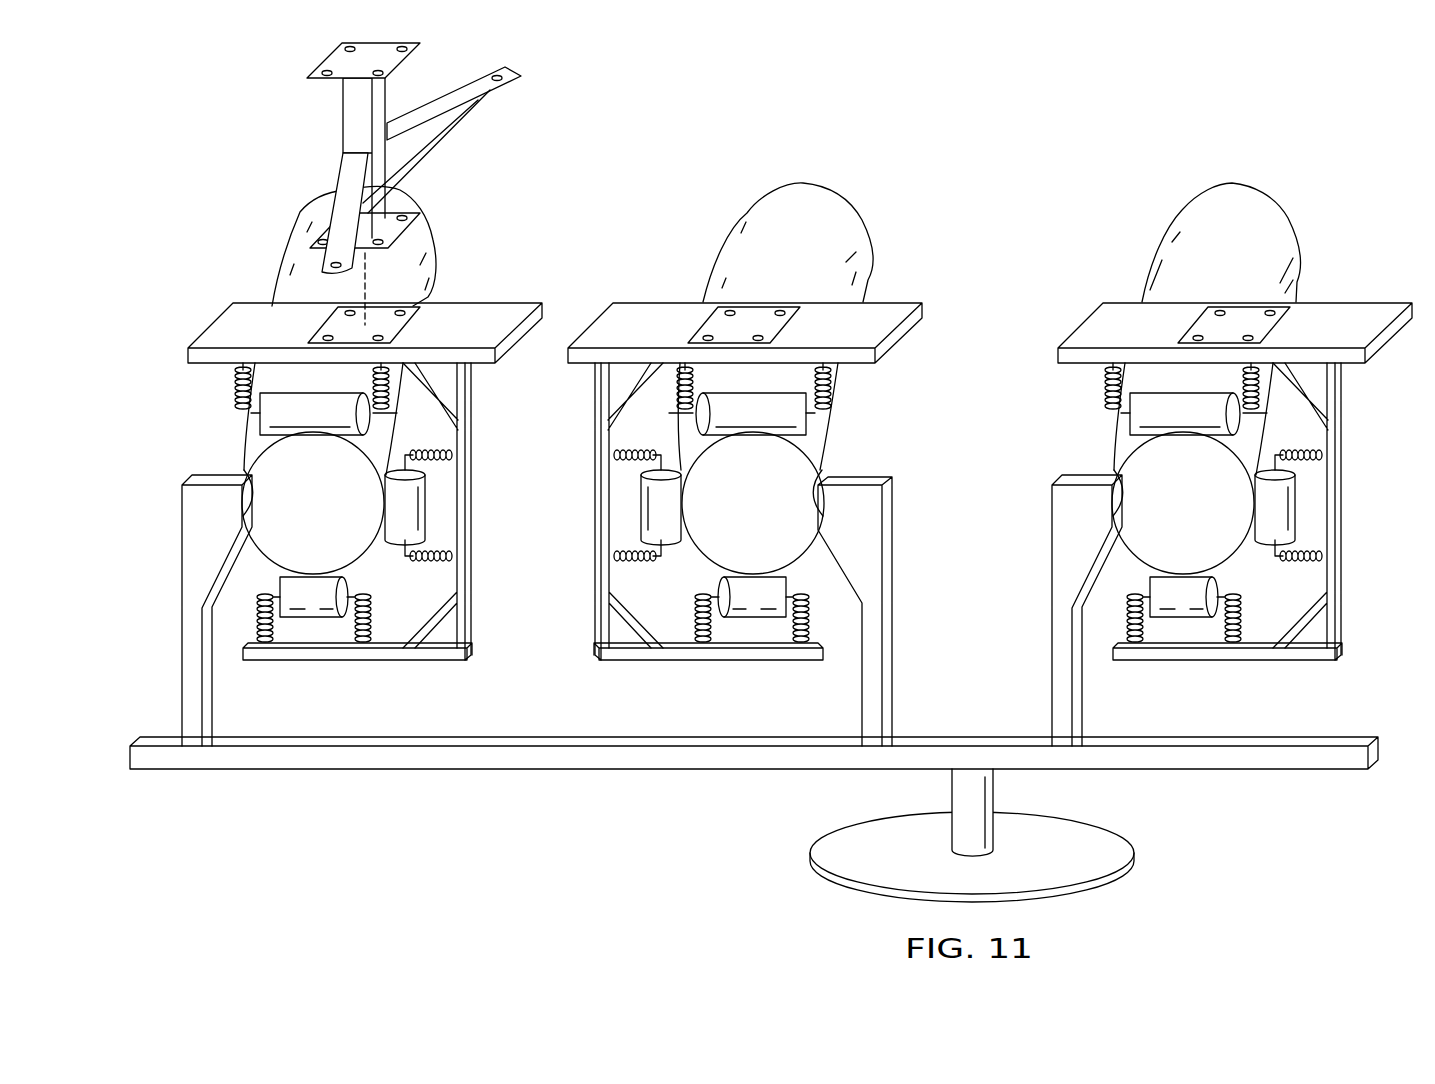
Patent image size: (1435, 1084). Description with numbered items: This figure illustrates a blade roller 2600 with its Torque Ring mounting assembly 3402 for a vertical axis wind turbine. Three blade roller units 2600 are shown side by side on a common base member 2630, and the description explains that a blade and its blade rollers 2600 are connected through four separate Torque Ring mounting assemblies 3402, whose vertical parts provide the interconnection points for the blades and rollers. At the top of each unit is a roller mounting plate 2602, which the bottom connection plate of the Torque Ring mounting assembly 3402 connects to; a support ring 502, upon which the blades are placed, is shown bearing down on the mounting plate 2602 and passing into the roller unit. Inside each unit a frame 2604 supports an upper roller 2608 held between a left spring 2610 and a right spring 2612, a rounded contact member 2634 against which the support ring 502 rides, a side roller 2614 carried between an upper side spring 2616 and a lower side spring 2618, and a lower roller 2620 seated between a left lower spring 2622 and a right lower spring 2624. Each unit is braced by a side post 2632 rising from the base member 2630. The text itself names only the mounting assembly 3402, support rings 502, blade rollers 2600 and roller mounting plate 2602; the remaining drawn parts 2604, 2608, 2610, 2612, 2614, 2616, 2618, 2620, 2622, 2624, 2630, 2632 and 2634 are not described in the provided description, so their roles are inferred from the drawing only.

The Torque Ring mounting assembly 3402 is at (318, 142).
The support ring 502 is at (300, 268).
The blade roller 2600 is at (455, 667).
The roller mounting plate 2602 is at (225, 328).
The support frame 2604 is at (470, 565).
The upper roller 2608 is at (285, 405).
The left spring 2610 is at (1103, 388).
The right spring 2612 is at (1263, 400).
The side actuator 2614 is at (418, 493).
The upper side spring 2616 is at (1310, 452).
The lower side spring 2618 is at (1308, 568).
The lower roller 2620 is at (307, 595).
The left lower spring 2622 is at (1122, 625).
The right lower spring 2624 is at (1248, 625).
The base beam 2630 is at (758, 769).
The side post 2632 is at (195, 540).
The ball contact 2634 is at (255, 497).